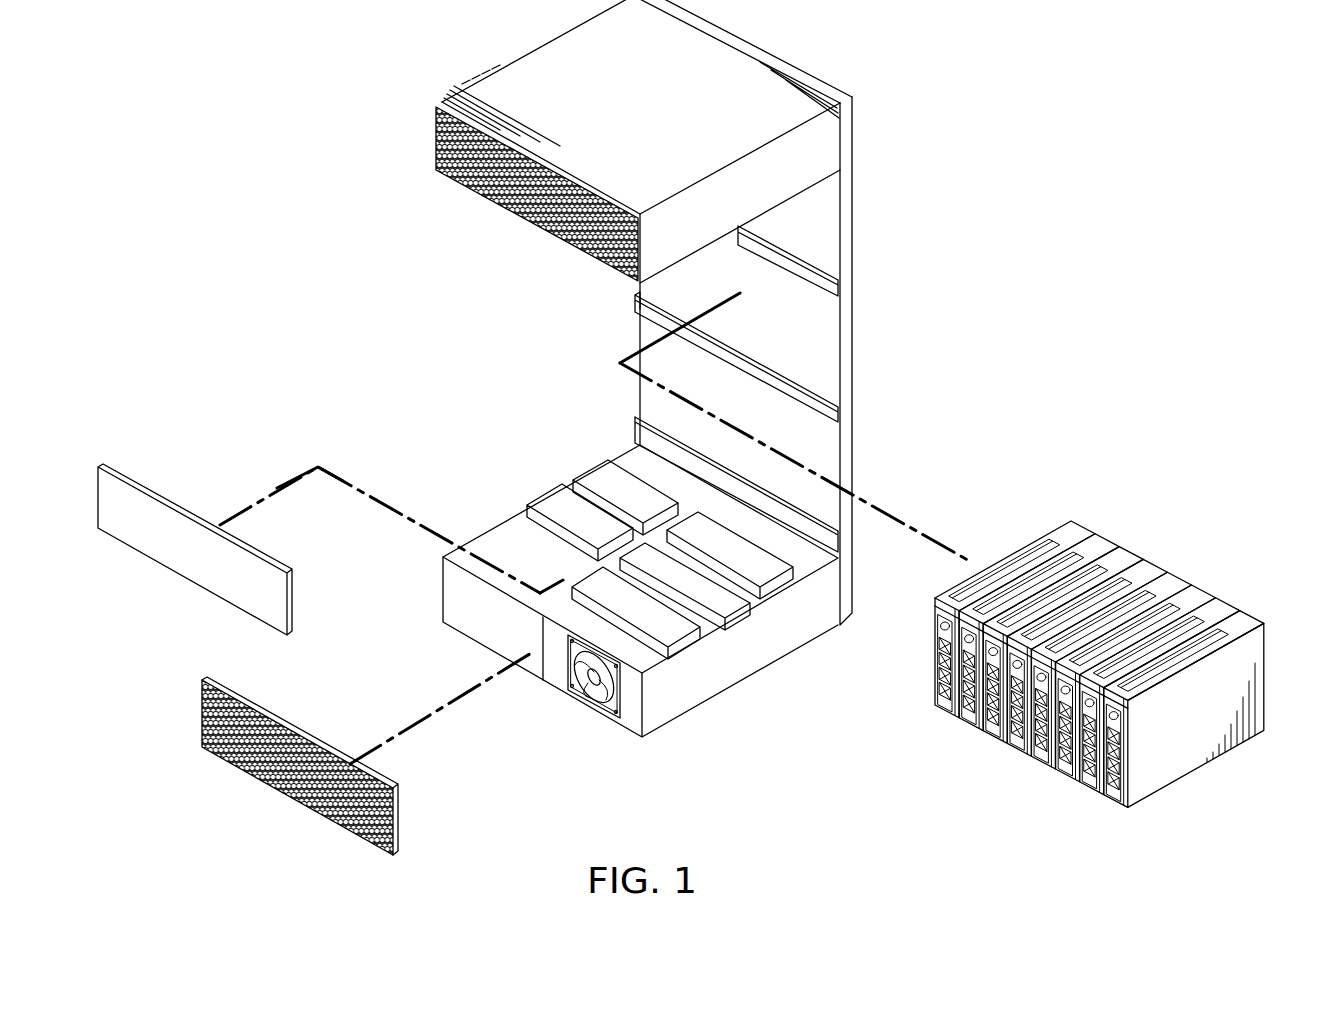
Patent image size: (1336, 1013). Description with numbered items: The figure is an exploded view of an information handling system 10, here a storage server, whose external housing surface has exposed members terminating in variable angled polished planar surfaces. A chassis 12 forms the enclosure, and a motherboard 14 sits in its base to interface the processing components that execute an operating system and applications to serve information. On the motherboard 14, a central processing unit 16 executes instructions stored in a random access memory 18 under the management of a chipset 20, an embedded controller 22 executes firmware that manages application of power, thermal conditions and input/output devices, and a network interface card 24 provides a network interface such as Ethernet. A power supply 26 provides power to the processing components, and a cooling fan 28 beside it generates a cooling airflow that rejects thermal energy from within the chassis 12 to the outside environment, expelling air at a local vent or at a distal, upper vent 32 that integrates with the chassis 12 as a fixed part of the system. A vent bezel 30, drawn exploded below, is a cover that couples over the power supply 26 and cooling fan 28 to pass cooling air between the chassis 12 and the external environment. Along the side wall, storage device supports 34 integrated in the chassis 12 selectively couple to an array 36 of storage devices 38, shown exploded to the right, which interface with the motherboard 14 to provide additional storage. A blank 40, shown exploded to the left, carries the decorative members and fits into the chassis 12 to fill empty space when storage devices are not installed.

The information handling system 10 is at (1061, 155).
The chassis 12 is at (853, 326).
The motherboard 14 is at (498, 542).
The central processing unit (CPU) 16 is at (597, 473).
The random access memory (RAM) 18 is at (548, 498).
The chipset 20 is at (773, 575).
The embedded controller 22 is at (723, 603).
The network interface card (NIC) 24 is at (683, 630).
The power supply 26 is at (462, 597).
The cooling fan 28 is at (590, 702).
The vent bezel 30 is at (283, 797).
The vent 32 is at (436, 147).
The storage device support 34 is at (767, 490).
The array of storage devices 36 is at (1088, 708).
The storage device 38 is at (965, 722).
The blank 40 is at (196, 585).